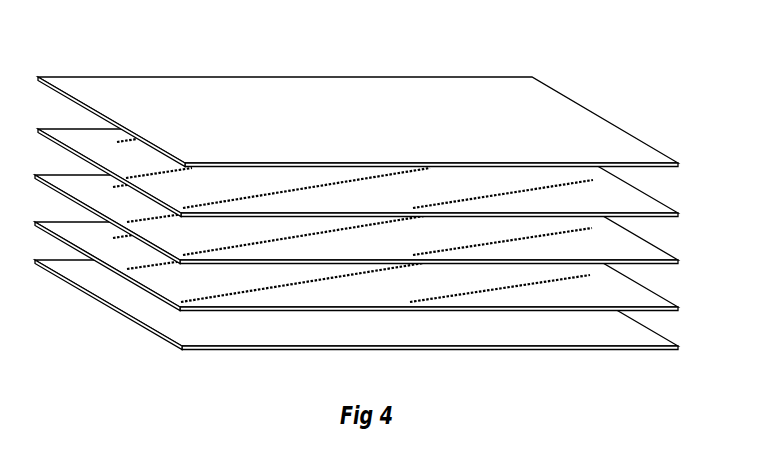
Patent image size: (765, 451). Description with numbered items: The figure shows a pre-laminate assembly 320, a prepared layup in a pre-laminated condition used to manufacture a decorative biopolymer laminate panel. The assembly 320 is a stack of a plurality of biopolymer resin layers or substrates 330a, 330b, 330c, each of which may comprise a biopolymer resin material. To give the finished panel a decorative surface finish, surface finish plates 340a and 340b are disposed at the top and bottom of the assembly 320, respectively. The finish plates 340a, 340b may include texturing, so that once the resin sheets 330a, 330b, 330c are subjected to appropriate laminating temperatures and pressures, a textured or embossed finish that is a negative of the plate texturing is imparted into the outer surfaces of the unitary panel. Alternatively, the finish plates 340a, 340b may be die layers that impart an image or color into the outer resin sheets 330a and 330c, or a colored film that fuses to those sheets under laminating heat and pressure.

The pre-laminate assembly 320 is at (381, 183).
The surface finish plate 340a is at (613, 134).
The biopolymer resin layer 330a is at (642, 200).
The biopolymer resin layer 330b is at (645, 253).
The biopolymer resin layer 330c is at (628, 302).
The surface finish plate 340b is at (618, 333).